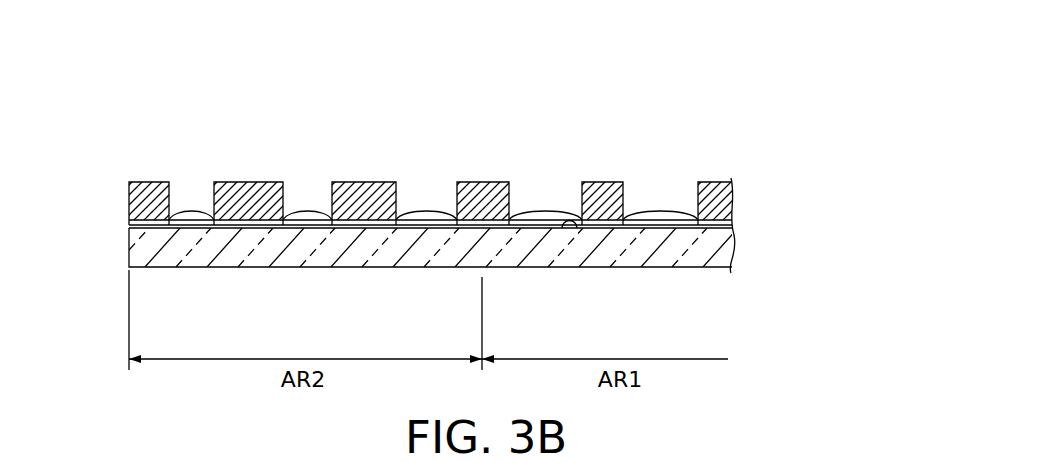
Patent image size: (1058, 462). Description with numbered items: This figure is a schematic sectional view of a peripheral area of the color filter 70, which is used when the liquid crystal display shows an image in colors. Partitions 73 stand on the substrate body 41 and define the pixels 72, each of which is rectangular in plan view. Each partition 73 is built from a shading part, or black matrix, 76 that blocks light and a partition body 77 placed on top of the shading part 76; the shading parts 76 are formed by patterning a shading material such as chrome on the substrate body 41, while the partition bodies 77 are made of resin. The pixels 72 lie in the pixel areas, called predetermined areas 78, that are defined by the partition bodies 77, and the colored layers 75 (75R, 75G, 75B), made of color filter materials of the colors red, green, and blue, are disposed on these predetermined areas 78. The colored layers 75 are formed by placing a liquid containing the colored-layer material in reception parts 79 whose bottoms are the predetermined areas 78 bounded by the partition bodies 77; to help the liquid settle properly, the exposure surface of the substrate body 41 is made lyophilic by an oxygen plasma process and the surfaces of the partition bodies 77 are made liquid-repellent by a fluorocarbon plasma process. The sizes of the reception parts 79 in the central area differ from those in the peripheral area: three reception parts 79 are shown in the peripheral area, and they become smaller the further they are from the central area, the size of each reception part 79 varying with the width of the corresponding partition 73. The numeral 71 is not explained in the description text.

The color filter 70 is at (771, 143).
The light shielding portion 71 is at (118, 205).
The pixel 72 is at (578, 173).
The partition 73 is at (251, 173).
The colored layer 75 is at (429, 171).
The colored layer (R) 75R is at (190, 218).
The colored layer (G) 75G is at (313, 218).
The colored layer (B) 75B is at (428, 218).
The shading part (black matrix) 76 is at (718, 227).
The partition body 77 is at (720, 199).
The predetermined area 78 is at (574, 232).
The reception part 79 is at (325, 190).
The substrate body 41 is at (722, 253).